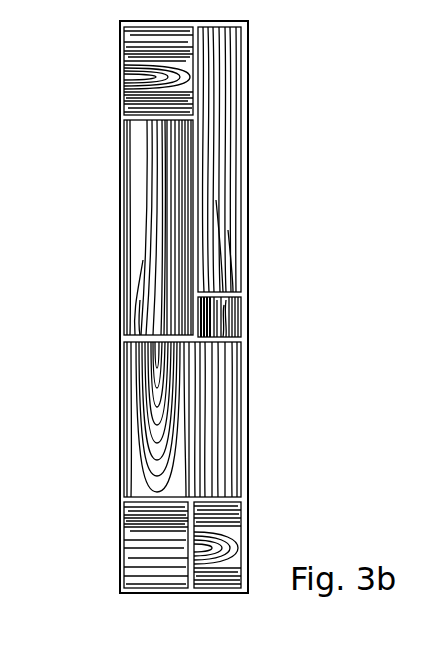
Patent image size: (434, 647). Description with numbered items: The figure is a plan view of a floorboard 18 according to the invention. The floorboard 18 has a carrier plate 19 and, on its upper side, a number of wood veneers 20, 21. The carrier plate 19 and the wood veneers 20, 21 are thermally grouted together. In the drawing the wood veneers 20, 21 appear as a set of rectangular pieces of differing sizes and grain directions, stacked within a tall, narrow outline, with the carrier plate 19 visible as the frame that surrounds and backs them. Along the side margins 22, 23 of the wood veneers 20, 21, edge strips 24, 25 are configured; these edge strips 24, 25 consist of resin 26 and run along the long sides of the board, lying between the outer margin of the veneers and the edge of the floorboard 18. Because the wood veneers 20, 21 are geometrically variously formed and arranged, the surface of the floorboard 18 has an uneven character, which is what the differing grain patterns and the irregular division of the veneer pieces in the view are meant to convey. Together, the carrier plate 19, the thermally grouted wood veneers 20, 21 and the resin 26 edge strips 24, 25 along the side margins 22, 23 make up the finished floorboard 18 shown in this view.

The floorboard 18 is at (268, 137).
The carrier plate 19 is at (250, 271).
The wood veneer 20 is at (133, 278).
The wood veneer 21 is at (242, 512).
The side margin 22 is at (246, 428).
The side margin 23 is at (123, 143).
The edge strip 24 is at (249, 207).
The edge strip 25 is at (125, 183).
The resin 26 is at (250, 176).